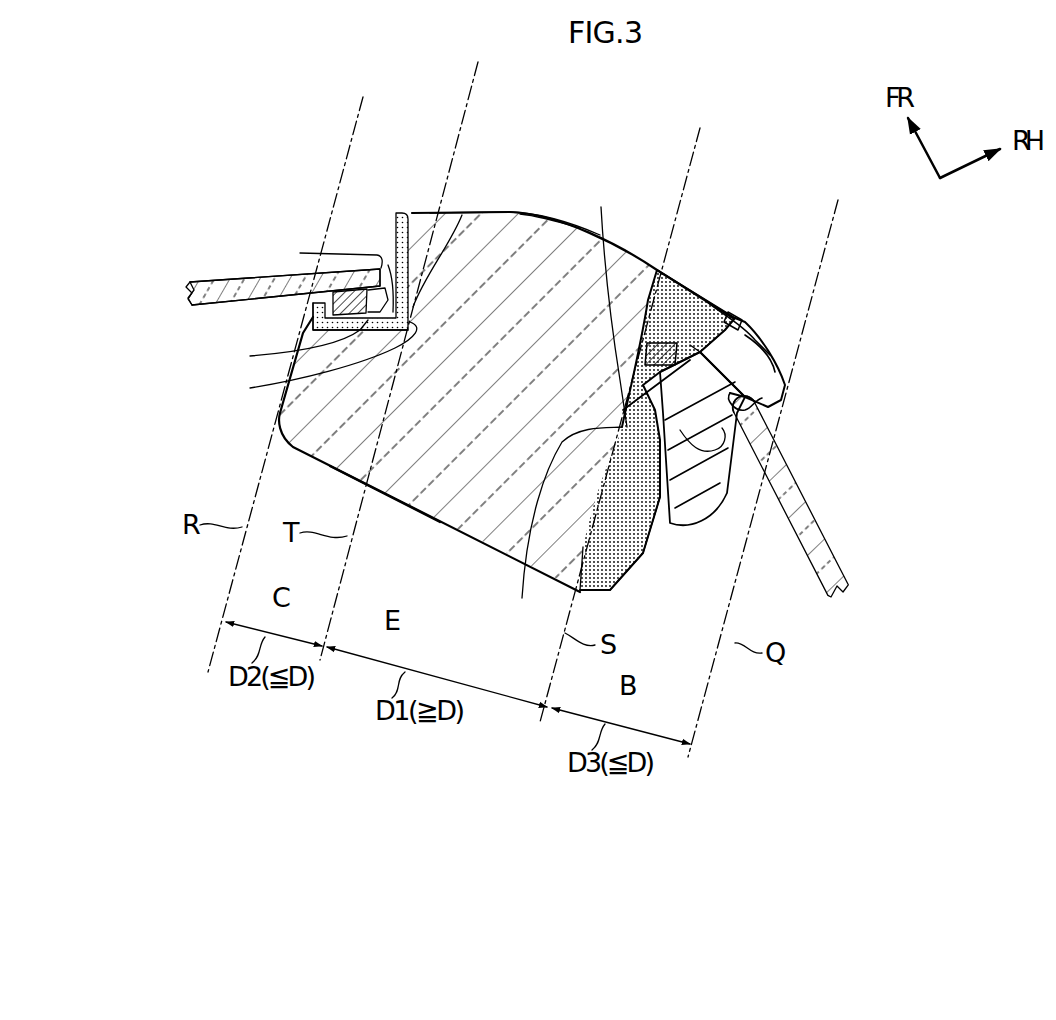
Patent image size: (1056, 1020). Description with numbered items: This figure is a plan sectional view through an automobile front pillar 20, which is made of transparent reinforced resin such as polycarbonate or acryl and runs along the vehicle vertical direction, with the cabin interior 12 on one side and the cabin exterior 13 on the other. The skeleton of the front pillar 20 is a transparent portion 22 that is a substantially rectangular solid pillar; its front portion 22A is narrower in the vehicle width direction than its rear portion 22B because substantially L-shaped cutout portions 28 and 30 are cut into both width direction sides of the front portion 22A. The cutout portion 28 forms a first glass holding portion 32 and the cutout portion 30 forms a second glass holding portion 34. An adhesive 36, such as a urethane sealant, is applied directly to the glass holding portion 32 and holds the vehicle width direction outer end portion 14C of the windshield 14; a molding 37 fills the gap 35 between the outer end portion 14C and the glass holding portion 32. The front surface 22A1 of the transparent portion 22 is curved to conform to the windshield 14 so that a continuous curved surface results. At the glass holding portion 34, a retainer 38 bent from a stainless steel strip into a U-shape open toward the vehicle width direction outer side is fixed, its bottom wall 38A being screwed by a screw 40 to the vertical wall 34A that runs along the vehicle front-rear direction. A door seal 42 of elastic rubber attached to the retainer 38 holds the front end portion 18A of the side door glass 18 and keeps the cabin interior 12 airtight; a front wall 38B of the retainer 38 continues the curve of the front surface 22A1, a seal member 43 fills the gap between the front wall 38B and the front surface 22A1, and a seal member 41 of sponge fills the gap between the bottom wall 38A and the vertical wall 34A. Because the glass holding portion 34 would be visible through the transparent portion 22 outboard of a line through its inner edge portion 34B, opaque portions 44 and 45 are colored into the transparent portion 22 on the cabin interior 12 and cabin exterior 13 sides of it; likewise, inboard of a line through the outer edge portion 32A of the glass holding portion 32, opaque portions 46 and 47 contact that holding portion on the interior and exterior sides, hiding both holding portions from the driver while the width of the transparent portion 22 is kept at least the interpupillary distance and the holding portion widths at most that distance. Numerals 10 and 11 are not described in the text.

The vehicle body frame 10 is at (828, 295).
The vehicle cabin 11 is at (918, 258).
The cabin interior 12 is at (396, 805).
The cabin exterior 13 is at (790, 133).
The windshield 14 is at (213, 281).
The vehicle width direction outer end portion 14C is at (340, 253).
The side door glass 18 is at (832, 537).
The front end portion 18A is at (780, 413).
The front pillar 20 is at (760, 243).
The transparent portion 22 is at (458, 552).
The front portion 22A is at (502, 210).
The front surface 22A1 is at (533, 218).
The rear portion 22B is at (392, 506).
The cutout portion 28 is at (400, 212).
The cutout portion 30 is at (748, 322).
The glass holding portion 32 is at (357, 232).
The vehicle width direction outer edge portion 32A is at (308, 364).
The glass holding portion 34 is at (800, 390).
The vertical wall 34A is at (609, 303).
The vehicle width direction inner edge portion 34B is at (560, 527).
The gap 35 is at (383, 262).
The adhesive 36 is at (332, 300).
The molding 37 is at (462, 215).
The retainer 38 is at (772, 352).
The bottom wall 38A is at (690, 345).
The front wall 38B is at (775, 365).
The screw 40 is at (675, 330).
The seal member 41 is at (775, 343).
The door seal 42 is at (720, 505).
The seal member 43 is at (738, 312).
The opaque portion 44 is at (625, 570).
The opaque portion 45 is at (680, 343).
The opaque portion 46 is at (290, 346).
The opaque portion 47 is at (405, 262).